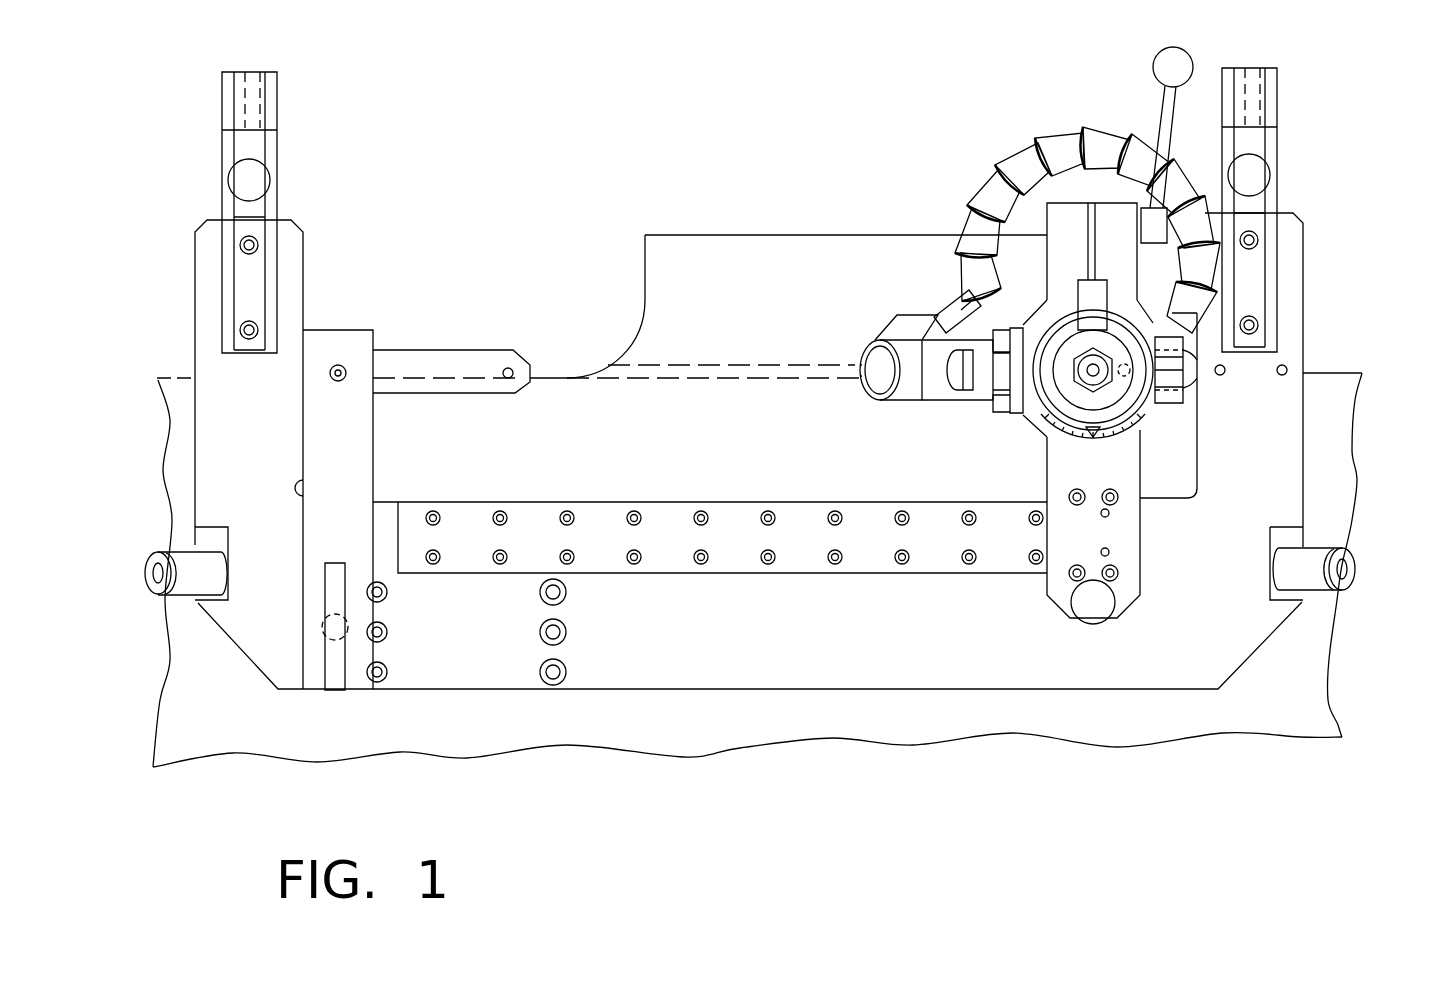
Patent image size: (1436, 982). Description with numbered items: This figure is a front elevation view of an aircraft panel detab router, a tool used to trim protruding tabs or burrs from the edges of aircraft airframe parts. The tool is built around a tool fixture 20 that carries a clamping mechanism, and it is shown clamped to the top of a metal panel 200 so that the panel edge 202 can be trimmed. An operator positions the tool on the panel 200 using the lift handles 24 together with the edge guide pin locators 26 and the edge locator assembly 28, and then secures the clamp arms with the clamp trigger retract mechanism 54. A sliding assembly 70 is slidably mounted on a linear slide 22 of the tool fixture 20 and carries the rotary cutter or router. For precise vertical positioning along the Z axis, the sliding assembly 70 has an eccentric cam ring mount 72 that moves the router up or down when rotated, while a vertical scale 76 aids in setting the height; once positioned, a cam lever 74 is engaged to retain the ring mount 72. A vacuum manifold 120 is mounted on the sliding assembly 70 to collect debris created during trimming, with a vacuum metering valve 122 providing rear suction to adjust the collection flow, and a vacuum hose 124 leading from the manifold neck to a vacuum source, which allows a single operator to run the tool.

The tool fixture 20 is at (487, 663).
The linear slide 22 is at (680, 502).
The lift handles 24 is at (158, 597).
The edge guide pin locators 26 is at (508, 368).
The edge locator assembly 28 is at (337, 690).
The clamp trigger retract mechanism 54 is at (240, 155).
The sliding assembly 70 is at (1045, 595).
The eccentric cam ring mount 72 is at (1070, 322).
The cam lever 74 is at (1160, 108).
The vertical scale 76 is at (1058, 438).
The vacuum manifold 120 is at (884, 324).
The vacuum metering valve 122 is at (968, 395).
The vacuum hose 124 is at (1033, 150).
The metal panel 200 is at (1172, 728).
The edge 202 is at (1318, 373).